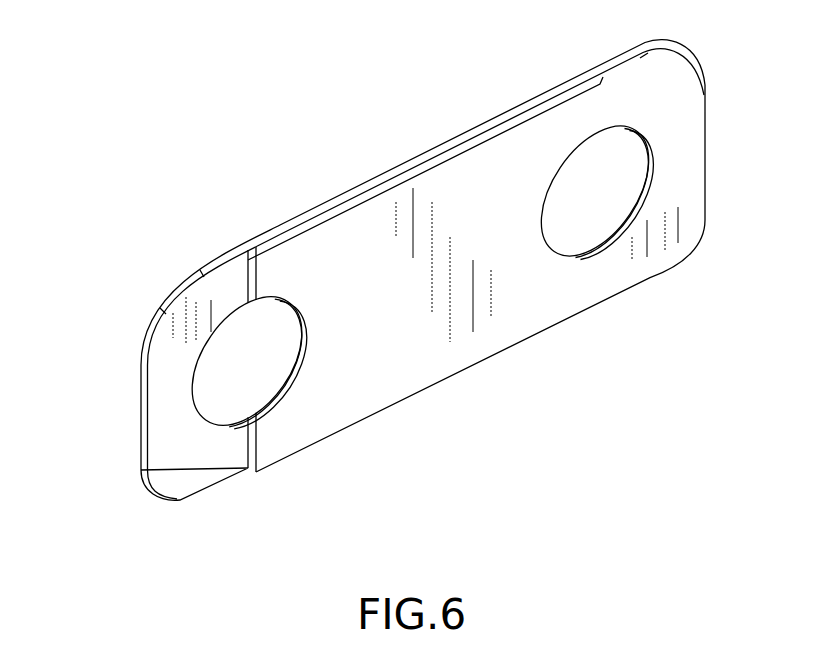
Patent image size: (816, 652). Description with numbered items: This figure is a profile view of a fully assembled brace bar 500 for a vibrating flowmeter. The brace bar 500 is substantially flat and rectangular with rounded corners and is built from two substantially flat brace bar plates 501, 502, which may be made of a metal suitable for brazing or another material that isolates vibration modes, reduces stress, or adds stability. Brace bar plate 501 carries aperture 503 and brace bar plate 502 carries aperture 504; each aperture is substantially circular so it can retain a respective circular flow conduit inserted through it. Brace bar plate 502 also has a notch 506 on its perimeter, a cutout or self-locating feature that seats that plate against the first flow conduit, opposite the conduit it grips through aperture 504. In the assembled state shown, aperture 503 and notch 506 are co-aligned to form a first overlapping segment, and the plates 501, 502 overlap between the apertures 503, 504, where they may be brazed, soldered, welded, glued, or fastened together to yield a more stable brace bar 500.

The brace bar 500 is at (153, 137).
The brace bar plate 501 is at (188, 474).
The brace bar plate 502 is at (323, 402).
The aperture 503 is at (237, 300).
The aperture 504 is at (592, 128).
The notch 506 is at (313, 342).